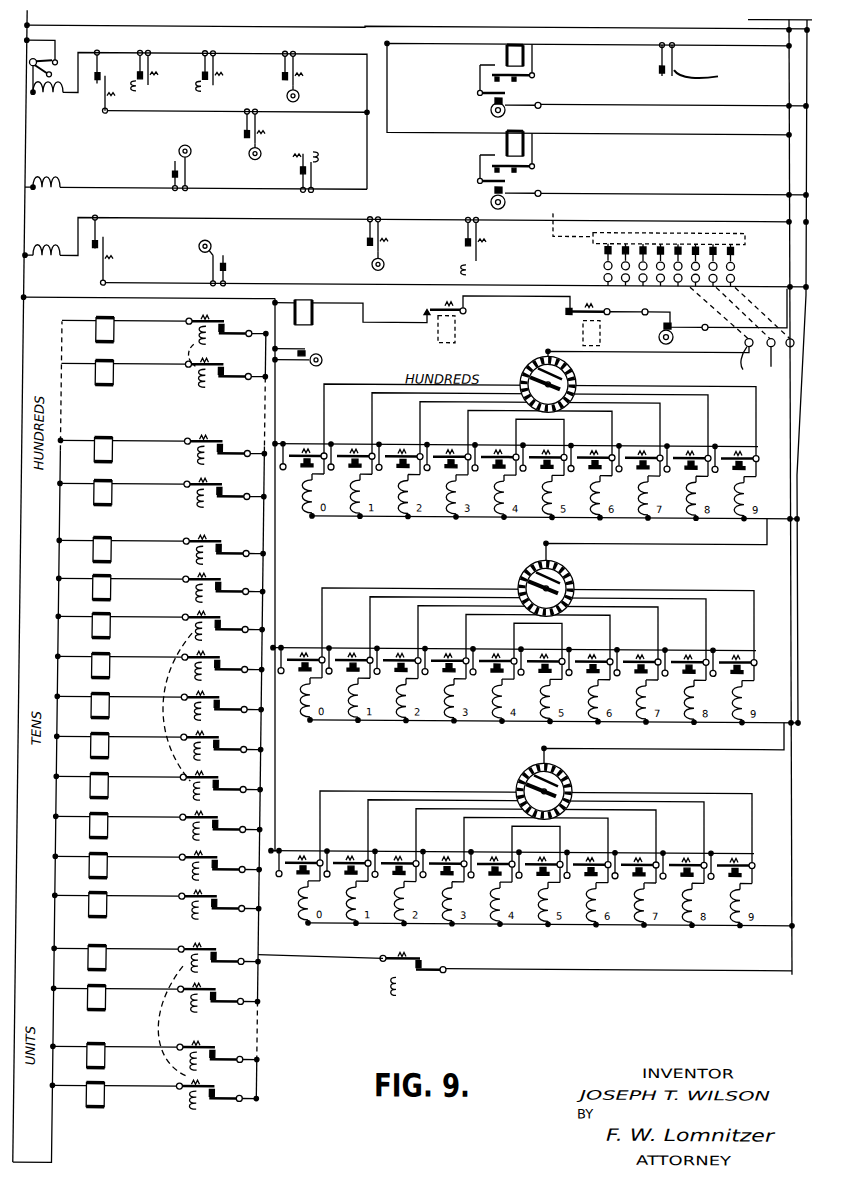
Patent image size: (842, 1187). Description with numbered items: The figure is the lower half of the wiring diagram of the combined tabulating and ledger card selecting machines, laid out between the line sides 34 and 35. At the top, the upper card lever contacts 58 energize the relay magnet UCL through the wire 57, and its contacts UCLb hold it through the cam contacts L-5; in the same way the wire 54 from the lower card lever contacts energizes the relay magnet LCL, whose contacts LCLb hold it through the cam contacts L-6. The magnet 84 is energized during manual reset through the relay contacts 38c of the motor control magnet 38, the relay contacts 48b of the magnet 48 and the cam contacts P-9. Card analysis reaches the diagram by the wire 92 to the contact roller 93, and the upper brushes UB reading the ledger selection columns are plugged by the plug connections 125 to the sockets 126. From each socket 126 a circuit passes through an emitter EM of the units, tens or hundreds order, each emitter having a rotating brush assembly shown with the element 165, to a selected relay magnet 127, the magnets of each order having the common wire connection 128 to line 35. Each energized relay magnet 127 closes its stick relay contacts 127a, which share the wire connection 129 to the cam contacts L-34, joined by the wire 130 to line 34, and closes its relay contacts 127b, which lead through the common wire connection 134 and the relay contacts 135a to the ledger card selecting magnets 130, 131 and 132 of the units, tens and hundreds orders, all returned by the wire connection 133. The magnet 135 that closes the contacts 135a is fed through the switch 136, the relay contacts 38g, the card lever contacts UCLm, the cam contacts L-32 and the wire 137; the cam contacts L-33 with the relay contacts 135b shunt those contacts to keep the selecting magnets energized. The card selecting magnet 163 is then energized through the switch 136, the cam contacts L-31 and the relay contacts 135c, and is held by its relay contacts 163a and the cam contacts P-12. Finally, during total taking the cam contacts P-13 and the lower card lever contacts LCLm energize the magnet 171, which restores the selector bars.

The switch 136 is at (52, 58).
The wire 57 is at (262, 25).
The relay contacts 38g is at (150, 66).
The card lever contacts UCLm is at (215, 66).
The cam contacts L-32 is at (298, 78).
The relay contacts 135b is at (215, 84).
The motor control magnet 38 is at (437, 325).
The relay magnet UCL is at (542, 80).
The magnet 135 is at (55, 96).
The cam contacts L-33 is at (262, 126).
The relay magnet LCL is at (550, 151).
The magnet 171 is at (57, 182).
The cam contacts P-13 is at (175, 172).
The lower card lever contacts LCLm is at (300, 172).
The card selecting magnet 163 is at (47, 250).
The relay contacts 163a is at (105, 238).
The cam contacts P-12 is at (222, 254).
The line 34 is at (27, 286).
The ledger card selecting magnet 130 is at (108, 998).
The relay contacts UCLb is at (482, 62).
The wire 137 is at (587, 24).
The upper card lever contacts 58 is at (663, 78).
The wire 54 is at (789, 86).
The cam contacts L-5 is at (510, 105).
The cam contacts L-6 is at (520, 183).
The relay contacts LCLb is at (480, 163).
The cam contacts L-31 is at (381, 236).
The relay contacts 135c is at (480, 239).
The contact roller 93 is at (688, 245).
The wire 92 is at (577, 233).
The upper brushes UB is at (740, 247).
The plug connections 125 is at (740, 303).
The relay contacts 38c is at (427, 307).
The relay contacts 48b is at (580, 306).
The cam contacts P-9 is at (675, 318).
The magnet 84 is at (313, 312).
The magnet 48 is at (601, 330).
The sockets 126 is at (771, 362).
The stepping magnet 165 is at (546, 355).
The emitter EM is at (575, 370).
The wire connection 129 is at (350, 436).
The stick relay contacts 127a is at (560, 453).
The relay magnet 127 is at (653, 511).
The wire connection 128 is at (735, 516).
The line 35 is at (790, 568).
The ledger card selecting magnet 131 is at (108, 870).
The ledger card selecting magnet 132 is at (112, 492).
The relay contacts 127b is at (236, 352).
The cam contacts L-34 is at (297, 368).
The wire connection 134 is at (262, 974).
The relay contacts 135a is at (446, 963).
The wire connection 133 is at (66, 1148).